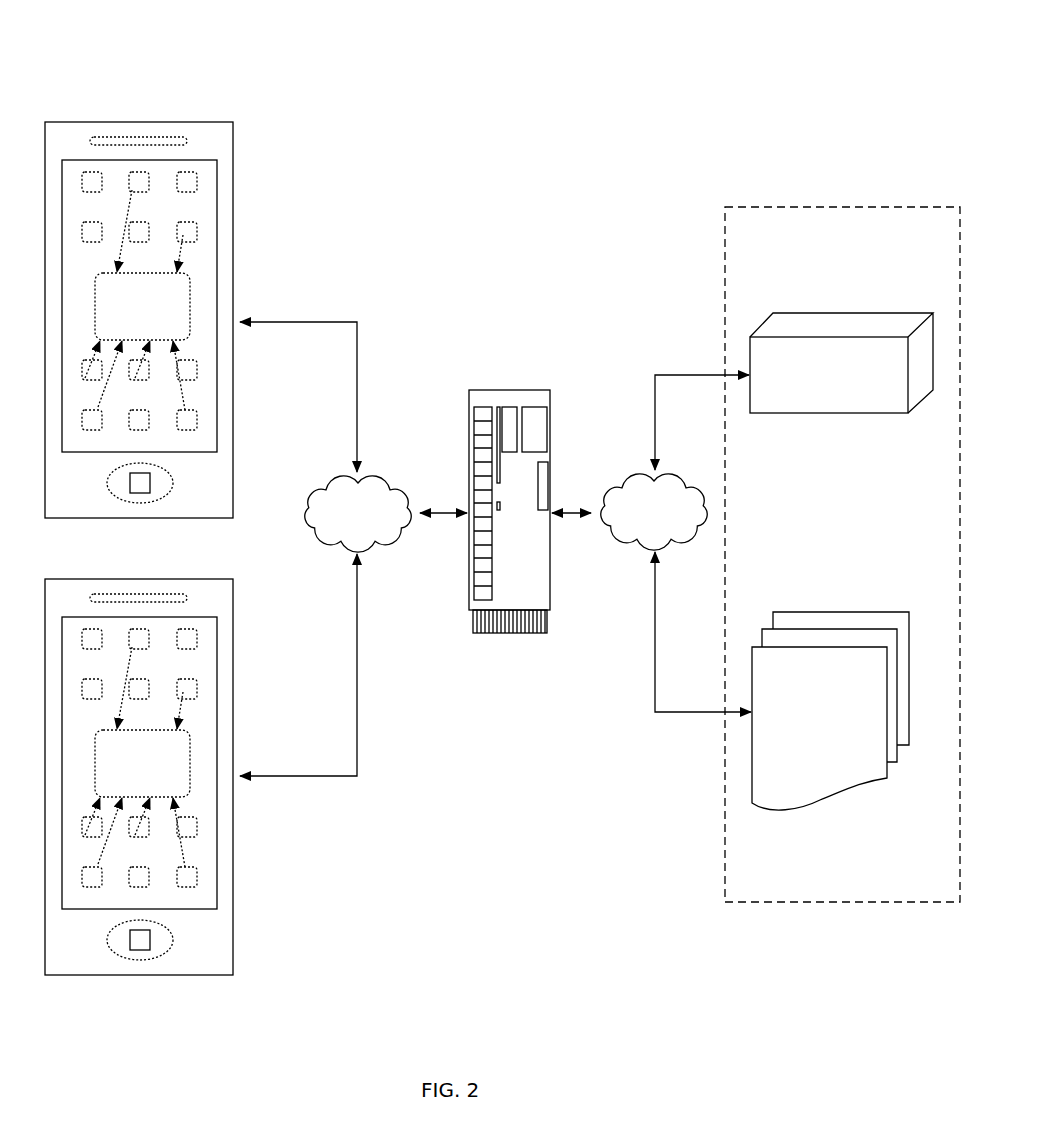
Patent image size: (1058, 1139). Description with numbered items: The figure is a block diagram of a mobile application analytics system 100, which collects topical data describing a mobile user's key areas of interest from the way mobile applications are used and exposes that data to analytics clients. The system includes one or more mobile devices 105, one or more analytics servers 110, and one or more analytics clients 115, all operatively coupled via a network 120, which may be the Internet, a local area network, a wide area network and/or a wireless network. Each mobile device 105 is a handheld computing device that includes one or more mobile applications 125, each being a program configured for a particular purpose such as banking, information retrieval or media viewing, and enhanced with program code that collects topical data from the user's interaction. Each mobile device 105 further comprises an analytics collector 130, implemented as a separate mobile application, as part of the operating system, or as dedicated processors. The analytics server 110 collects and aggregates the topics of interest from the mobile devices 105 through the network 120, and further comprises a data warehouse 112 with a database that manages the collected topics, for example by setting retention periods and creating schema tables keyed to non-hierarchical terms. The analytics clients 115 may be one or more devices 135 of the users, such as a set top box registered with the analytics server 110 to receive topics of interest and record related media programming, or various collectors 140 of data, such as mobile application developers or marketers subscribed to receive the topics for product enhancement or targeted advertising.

The mobile application analytics system 100 is at (325, 68).
The mobile device 105 is at (122, 122).
The analytics server 110 is at (512, 388).
The data warehouse 112 is at (541, 417).
The analytics client 115 is at (843, 205).
The network 120 is at (339, 525).
The mobile application 125 is at (192, 223).
The analytics collector 130 is at (168, 305).
The device 135 is at (790, 325).
The collector 140 is at (783, 768).